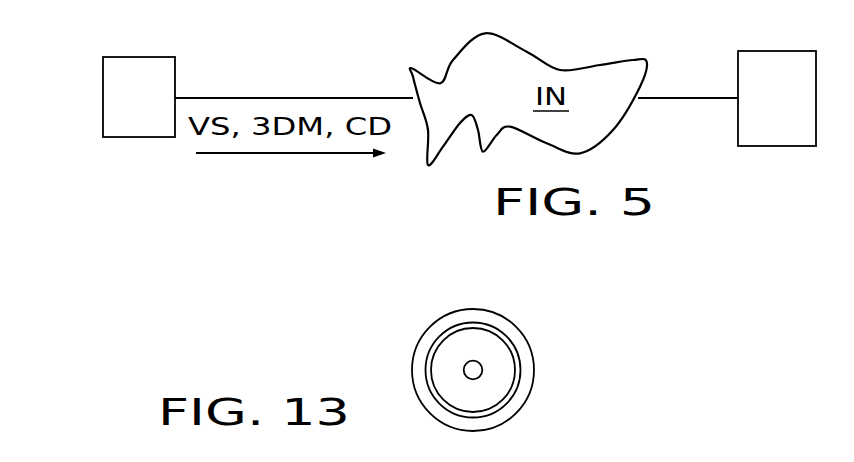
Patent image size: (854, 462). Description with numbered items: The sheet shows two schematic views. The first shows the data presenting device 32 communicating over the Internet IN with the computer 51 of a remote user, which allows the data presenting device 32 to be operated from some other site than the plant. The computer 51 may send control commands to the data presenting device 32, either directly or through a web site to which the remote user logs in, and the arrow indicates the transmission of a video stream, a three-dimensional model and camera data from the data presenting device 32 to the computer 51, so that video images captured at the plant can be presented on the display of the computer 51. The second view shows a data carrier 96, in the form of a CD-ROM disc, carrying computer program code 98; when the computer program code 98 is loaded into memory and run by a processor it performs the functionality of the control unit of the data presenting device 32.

In FIG. 5, the data presenting device 32 is at (154, 124).
In FIG. 5, the computer of the remote user 51 is at (789, 101).
In FIG. 13, the data carrier 96 is at (533, 377).
In FIG. 13, the computer program code 98 is at (508, 343).